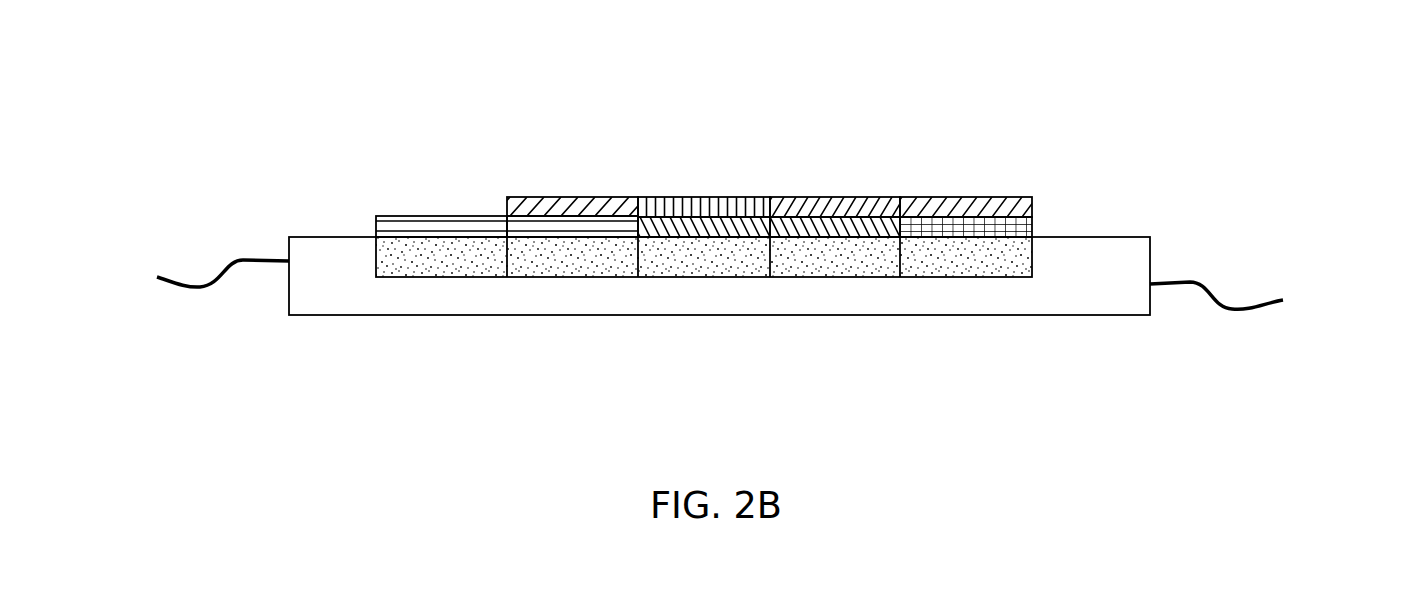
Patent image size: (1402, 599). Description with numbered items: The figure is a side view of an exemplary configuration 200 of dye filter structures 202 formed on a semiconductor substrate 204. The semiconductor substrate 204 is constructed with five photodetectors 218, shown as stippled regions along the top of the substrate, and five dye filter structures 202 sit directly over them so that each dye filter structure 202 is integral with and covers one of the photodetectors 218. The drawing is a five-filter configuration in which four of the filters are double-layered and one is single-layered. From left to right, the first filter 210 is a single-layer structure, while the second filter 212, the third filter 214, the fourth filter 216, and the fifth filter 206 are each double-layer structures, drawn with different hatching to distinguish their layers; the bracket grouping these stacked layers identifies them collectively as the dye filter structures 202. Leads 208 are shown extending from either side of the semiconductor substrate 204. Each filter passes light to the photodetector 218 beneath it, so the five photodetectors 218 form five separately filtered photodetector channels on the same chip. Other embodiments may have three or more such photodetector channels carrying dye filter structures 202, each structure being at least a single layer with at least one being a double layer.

The configuration of dye filter structures 200 is at (190, 113).
The dye filter structures 202 is at (752, 144).
The semiconductor substrate 204 is at (1135, 272).
The F5 filter 206 is at (1052, 235).
The electrical leads 208 is at (178, 272).
The F1 filter 210 is at (443, 215).
The F2 filter 212 is at (574, 175).
The F3 filter 214 is at (705, 195).
The F4 filter 216 is at (836, 195).
The photodetectors 218 is at (583, 277).